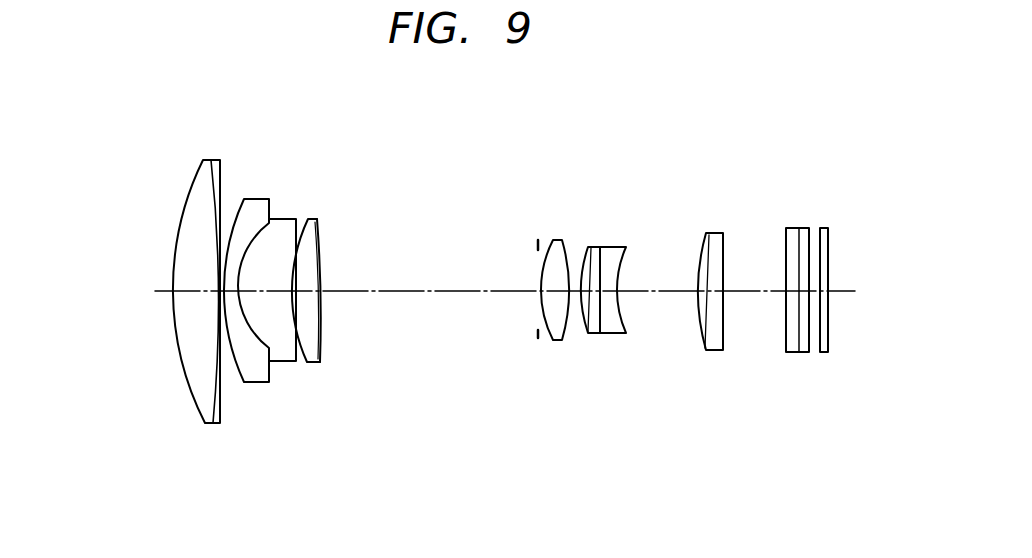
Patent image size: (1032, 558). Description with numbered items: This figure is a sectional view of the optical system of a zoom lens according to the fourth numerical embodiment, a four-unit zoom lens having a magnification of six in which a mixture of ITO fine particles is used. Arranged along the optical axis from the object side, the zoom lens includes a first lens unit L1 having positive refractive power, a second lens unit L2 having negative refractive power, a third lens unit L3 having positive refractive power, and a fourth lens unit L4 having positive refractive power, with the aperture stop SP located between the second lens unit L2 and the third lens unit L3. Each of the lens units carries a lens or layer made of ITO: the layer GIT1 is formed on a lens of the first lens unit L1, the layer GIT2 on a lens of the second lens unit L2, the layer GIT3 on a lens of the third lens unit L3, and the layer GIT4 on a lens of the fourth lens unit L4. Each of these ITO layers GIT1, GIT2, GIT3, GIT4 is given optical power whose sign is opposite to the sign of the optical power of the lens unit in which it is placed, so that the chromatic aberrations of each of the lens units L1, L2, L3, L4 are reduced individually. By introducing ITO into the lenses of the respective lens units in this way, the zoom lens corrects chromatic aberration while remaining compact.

The first lens unit L1 is at (213, 290).
The second lens unit L2 is at (296, 313).
The third lens unit L3 is at (591, 318).
The fourth lens unit L4 is at (708, 312).
The aperture stop SP is at (538, 238).
The lens (layer) made of ITO GIT1 is at (213, 158).
The lens (layer) made of ITO GIT2 is at (321, 240).
The lens (layer) made of ITO GIT3 is at (588, 247).
The lens (layer) made of ITO GIT4 is at (705, 233).